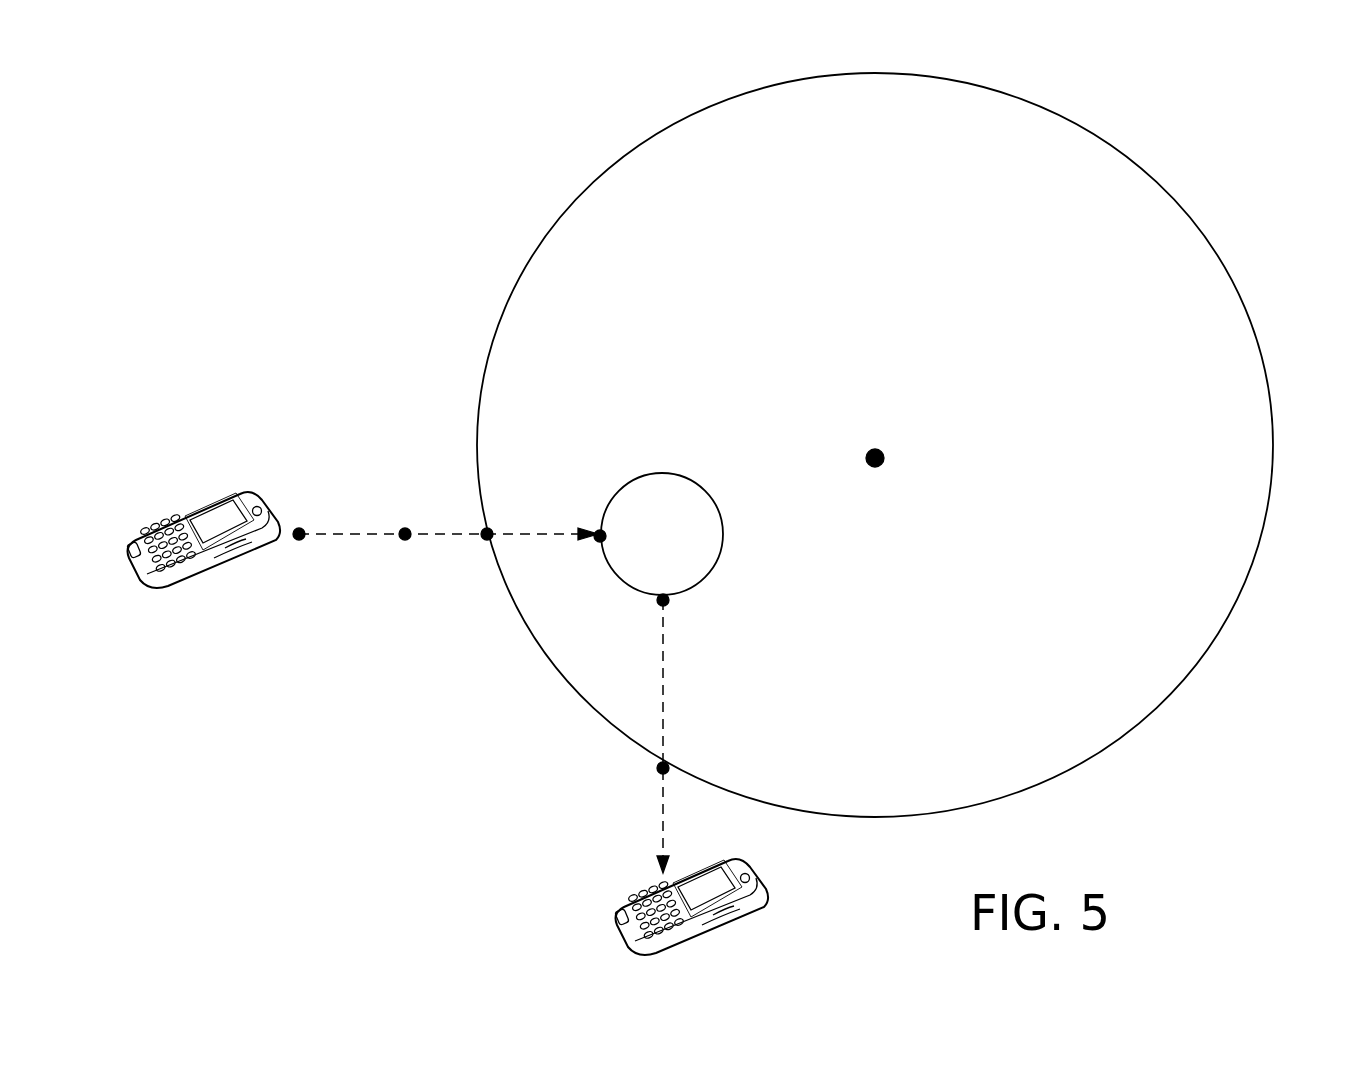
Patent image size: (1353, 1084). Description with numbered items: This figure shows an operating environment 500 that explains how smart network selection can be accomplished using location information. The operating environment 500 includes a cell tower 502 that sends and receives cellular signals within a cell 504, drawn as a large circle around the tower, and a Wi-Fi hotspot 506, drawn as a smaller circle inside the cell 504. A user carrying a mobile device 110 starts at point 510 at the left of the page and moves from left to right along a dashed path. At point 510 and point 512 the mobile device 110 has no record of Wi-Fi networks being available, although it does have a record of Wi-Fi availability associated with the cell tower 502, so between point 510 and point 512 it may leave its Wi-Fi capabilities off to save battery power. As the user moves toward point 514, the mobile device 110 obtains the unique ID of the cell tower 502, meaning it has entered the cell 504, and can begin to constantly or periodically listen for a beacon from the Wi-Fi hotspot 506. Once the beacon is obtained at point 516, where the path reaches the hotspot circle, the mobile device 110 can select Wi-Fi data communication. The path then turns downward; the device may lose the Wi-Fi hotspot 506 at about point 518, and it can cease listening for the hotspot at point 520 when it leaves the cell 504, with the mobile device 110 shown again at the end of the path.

The operating environment 500 is at (512, 98).
The cell tower 502 is at (876, 449).
The cell 504 is at (571, 205).
The Wi-Fi hotspot 506 is at (705, 578).
The mobile device 110 is at (228, 500).
The point 510 is at (299, 540).
The point 512 is at (404, 527).
The point 514 is at (486, 540).
The point 516 is at (599, 542).
The point 518 is at (661, 606).
The point 520 is at (661, 774).